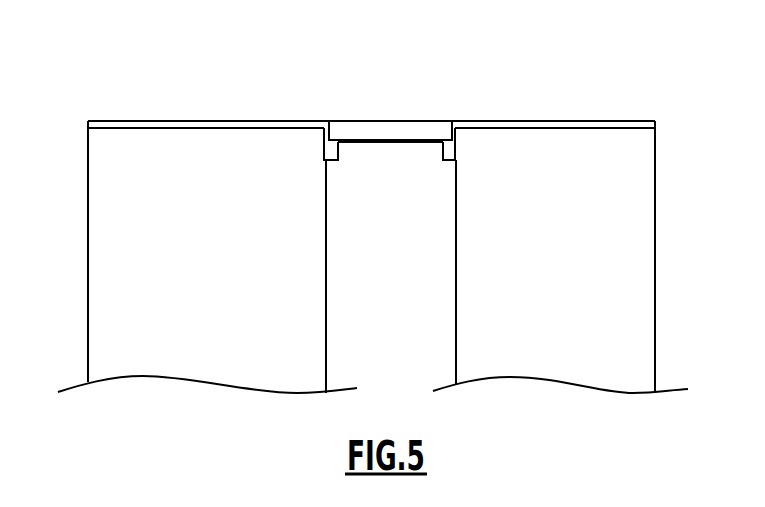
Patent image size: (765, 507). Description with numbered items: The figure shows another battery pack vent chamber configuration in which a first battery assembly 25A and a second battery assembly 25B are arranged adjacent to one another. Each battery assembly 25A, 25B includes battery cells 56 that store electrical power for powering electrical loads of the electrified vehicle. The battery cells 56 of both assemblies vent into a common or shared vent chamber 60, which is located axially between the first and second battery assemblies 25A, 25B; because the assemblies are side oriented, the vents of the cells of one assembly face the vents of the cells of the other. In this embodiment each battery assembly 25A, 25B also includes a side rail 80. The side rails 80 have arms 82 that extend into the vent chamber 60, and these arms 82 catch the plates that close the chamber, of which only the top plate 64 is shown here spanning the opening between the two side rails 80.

The first battery assembly 25A is at (109, 80).
The second battery assembly 25B is at (644, 80).
The battery cells 56 is at (223, 270).
The vent chamber 60 is at (406, 282).
The top plate 64 is at (380, 121).
The side rail 80 is at (165, 121).
The arms 82 is at (325, 163).